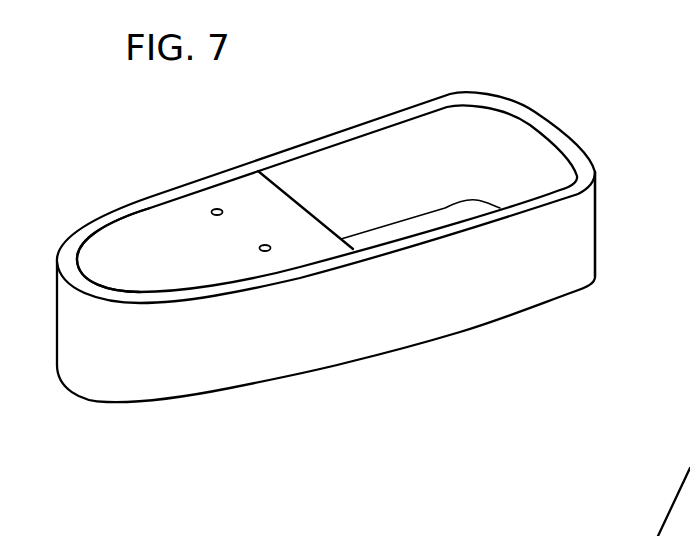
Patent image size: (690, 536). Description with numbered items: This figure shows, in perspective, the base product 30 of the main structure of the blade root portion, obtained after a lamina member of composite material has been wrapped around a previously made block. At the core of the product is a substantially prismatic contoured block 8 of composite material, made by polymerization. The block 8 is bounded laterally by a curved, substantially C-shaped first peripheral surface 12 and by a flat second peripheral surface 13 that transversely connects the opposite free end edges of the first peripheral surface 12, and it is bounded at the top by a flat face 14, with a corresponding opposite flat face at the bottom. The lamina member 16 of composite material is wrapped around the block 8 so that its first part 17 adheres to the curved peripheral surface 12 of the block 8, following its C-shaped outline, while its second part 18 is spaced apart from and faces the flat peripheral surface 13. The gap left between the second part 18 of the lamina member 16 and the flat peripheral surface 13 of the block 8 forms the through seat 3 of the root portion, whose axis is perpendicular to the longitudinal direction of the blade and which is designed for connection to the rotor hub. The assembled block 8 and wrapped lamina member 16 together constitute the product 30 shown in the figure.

The through seat 3 is at (453, 155).
The contoured block 8 is at (160, 233).
The first peripheral surface 12 is at (223, 278).
The second peripheral surface 13 is at (302, 200).
The flat face 14 is at (125, 238).
The lamina member 16 is at (497, 287).
The first part 17 is at (260, 355).
The second part 18 is at (587, 227).
The product 30 is at (147, 406).